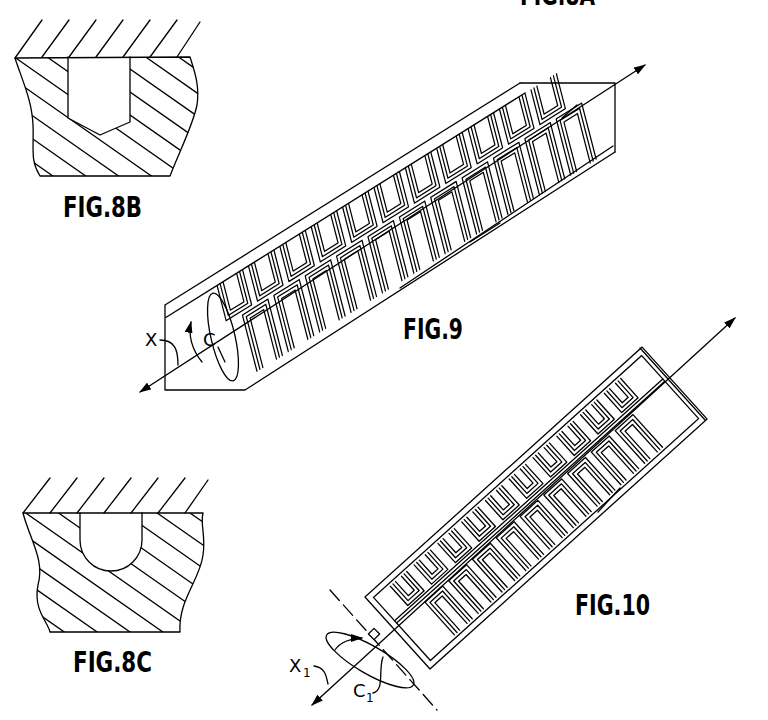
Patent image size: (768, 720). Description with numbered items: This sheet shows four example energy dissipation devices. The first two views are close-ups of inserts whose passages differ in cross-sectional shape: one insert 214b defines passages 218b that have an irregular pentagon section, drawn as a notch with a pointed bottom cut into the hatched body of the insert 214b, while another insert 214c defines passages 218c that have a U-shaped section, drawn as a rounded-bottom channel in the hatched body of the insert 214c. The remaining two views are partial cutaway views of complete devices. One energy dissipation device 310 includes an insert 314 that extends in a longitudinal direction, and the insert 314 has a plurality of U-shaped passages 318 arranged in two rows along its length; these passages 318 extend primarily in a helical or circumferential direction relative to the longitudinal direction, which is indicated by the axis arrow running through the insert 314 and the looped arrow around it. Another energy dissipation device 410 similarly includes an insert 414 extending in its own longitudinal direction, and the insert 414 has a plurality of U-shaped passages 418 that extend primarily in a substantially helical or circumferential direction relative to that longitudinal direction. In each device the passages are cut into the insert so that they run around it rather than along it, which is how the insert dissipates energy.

In FIG. 8B, the passages 218b is at (104, 104).
In FIG. 8B, the insert 214b is at (160, 131).
In FIG. 8C, the passages 218c is at (112, 550).
In FIG. 8C, the insert 214c is at (166, 581).
In FIG. 9, the energy dissipation device 310 is at (390, 225).
In FIG. 9, the insert 314 is at (560, 117).
In FIG. 9, the U-shaped passages 318 is at (484, 233).
In FIG. 10, the energy dissipation device 410 is at (551, 490).
In FIG. 10, the insert 414 is at (663, 380).
In FIG. 10, the U-shaped passages 418 is at (617, 489).